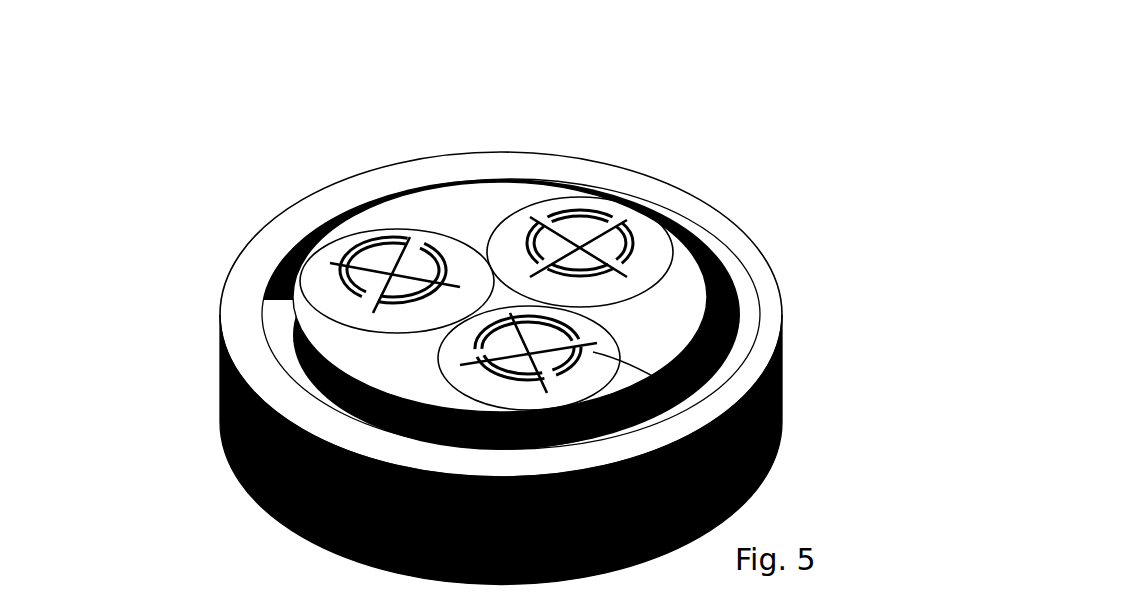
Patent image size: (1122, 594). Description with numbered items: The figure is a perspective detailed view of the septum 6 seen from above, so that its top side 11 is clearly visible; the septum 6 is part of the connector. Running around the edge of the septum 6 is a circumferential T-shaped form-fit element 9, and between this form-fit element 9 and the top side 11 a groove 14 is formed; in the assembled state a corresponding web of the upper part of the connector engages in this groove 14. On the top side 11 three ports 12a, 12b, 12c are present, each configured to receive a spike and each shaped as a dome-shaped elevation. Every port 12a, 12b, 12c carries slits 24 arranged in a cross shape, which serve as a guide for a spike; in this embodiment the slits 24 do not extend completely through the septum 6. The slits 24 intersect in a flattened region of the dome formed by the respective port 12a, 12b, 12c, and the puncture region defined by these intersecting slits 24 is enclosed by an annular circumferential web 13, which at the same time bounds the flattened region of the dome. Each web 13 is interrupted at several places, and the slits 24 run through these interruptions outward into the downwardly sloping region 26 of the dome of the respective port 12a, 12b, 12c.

The septum 6 is at (168, 502).
The T-shaped form-fit element 9 is at (783, 444).
The top side 11 is at (357, 353).
The port 12a is at (345, 232).
The port 12b is at (578, 218).
The port 12c is at (783, 410).
The annular circumferential web 13 is at (502, 316).
The groove 14 is at (277, 327).
The slits 24 is at (330, 263).
The downwardly sloping region 26 is at (330, 288).